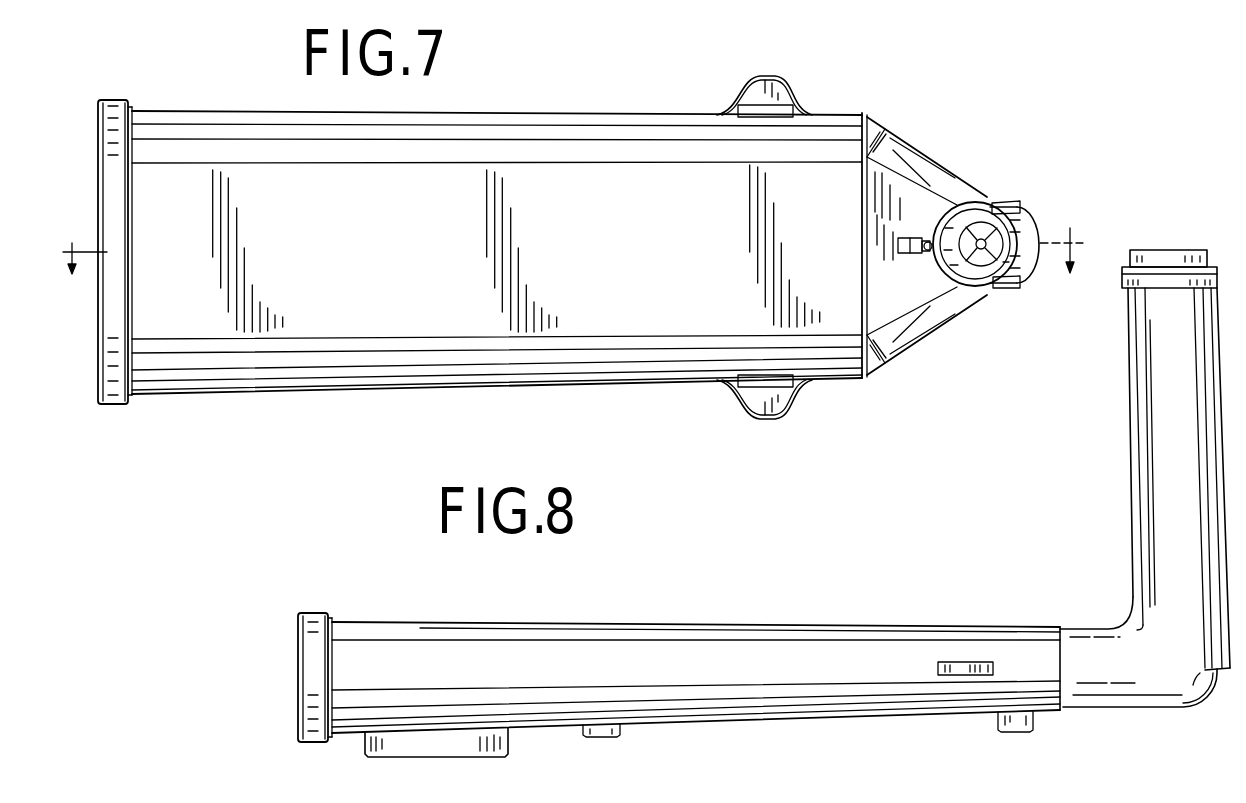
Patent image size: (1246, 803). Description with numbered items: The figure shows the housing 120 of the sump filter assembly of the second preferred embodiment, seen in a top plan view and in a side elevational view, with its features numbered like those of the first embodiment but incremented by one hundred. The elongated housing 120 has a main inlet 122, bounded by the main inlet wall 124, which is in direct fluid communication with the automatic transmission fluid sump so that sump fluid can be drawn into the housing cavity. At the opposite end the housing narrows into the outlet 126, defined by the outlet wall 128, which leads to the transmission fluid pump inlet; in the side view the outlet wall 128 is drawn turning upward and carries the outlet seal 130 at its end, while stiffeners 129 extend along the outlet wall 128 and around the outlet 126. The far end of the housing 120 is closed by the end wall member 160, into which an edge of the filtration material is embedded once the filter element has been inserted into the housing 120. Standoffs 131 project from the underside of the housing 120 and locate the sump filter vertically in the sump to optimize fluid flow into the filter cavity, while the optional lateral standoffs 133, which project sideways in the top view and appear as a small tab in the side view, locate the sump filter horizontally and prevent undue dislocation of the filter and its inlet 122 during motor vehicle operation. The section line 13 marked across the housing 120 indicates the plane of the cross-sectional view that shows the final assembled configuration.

In FIG. 7, the section line 13- 13 is at (575, 265).
In FIG. 7, the housing 120 is at (300, 128).
In FIG. 8, the housing 120 is at (707, 637).
In FIG. 8, the inlet 122 is at (430, 745).
In FIG. 8, the main inlet wall 124 is at (510, 740).
In FIG. 7, the outlet 126 is at (953, 225).
In FIG. 8, the outlet 126 is at (1164, 250).
In FIG. 7, the outlet wall 128 is at (1025, 260).
In FIG. 8, the outlet wall 128 is at (1160, 565).
In FIG. 7, the stiffeners 129 is at (1015, 202).
In FIG. 8, the stiffeners 129 is at (1210, 383).
In FIG. 8, the outlet seal 130 is at (1216, 268).
In FIG. 8, the standoffs 131 is at (600, 740).
In FIG. 7, the lateral standoffs 133 is at (768, 92).
In FIG. 8, the lateral standoffs 133 is at (975, 662).
In FIG. 7, the end wall member 160 is at (98, 138).
In FIG. 8, the end wall member 160 is at (298, 680).